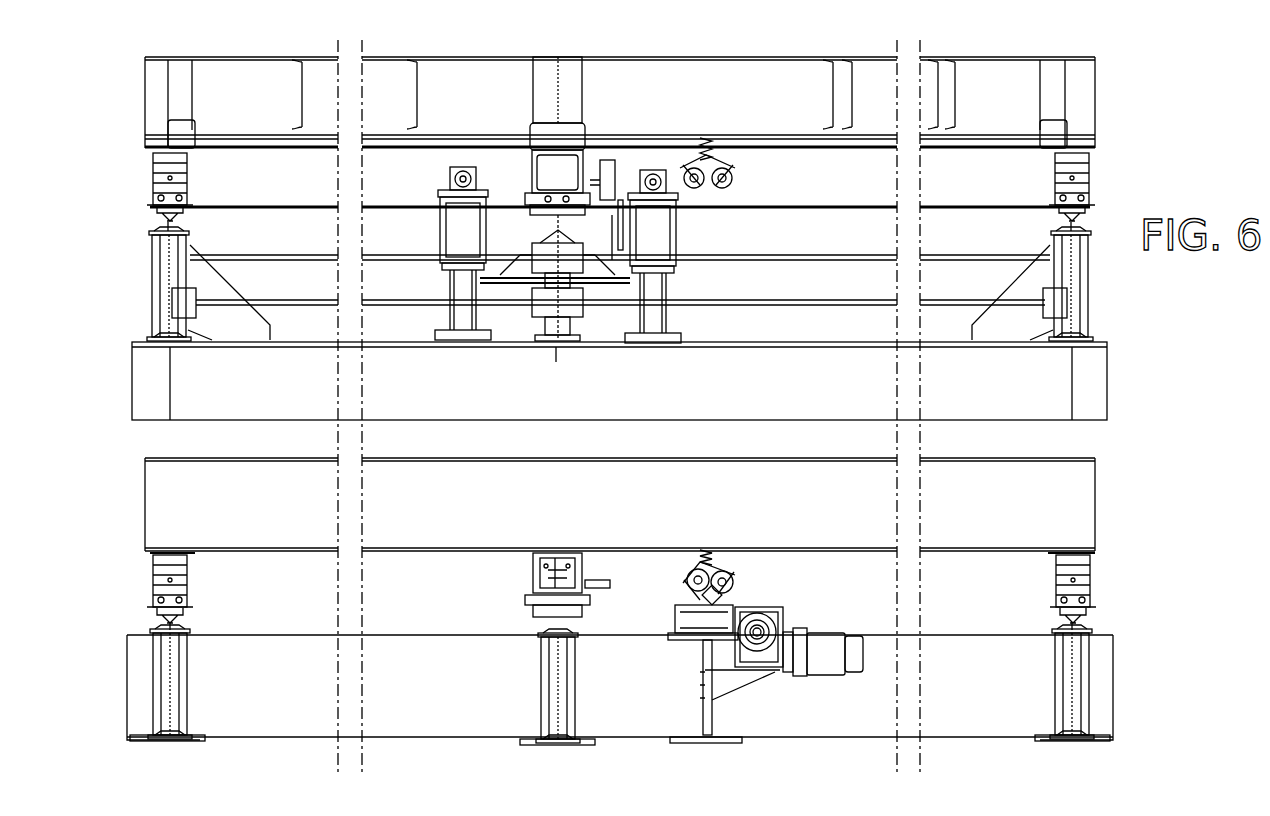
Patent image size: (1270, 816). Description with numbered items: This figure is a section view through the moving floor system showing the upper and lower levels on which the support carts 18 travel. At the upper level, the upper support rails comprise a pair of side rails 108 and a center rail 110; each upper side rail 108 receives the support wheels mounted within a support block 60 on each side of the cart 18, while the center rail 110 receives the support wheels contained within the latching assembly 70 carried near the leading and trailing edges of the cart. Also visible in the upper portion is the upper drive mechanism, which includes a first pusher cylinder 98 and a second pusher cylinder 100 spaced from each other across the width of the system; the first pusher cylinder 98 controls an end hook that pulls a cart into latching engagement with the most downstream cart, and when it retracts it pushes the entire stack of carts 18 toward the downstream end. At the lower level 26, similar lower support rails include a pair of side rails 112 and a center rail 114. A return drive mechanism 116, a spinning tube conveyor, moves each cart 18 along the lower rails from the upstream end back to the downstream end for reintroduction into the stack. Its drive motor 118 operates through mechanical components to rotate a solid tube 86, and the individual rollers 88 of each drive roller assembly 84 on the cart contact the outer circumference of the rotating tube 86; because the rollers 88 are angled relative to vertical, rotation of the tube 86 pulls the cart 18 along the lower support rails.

The support cart 18 is at (1052, 45).
The lower level 26 is at (1128, 578).
The support block 60 is at (153, 182).
The latching assembly 70 is at (594, 165).
The drive roller assembly 84 is at (730, 173).
The rotating tube 86 is at (722, 598).
The roller 88 is at (685, 588).
The first pusher cylinder 98 is at (450, 178).
The second pusher cylinder 100 is at (654, 170).
The upper side rail 108 is at (166, 230).
The upper center rail 110 is at (535, 262).
The lower side rail 112 is at (162, 624).
The lower center rail 114 is at (556, 626).
The return drive mechanism 116 is at (770, 586).
The drive motor 118 is at (830, 665).